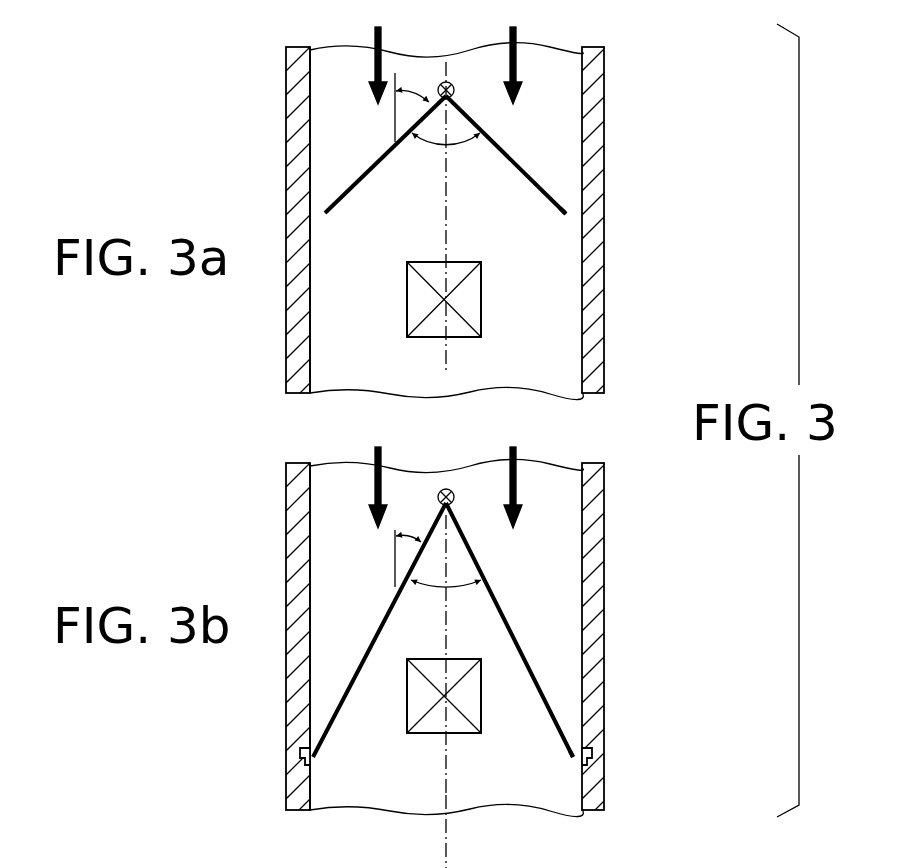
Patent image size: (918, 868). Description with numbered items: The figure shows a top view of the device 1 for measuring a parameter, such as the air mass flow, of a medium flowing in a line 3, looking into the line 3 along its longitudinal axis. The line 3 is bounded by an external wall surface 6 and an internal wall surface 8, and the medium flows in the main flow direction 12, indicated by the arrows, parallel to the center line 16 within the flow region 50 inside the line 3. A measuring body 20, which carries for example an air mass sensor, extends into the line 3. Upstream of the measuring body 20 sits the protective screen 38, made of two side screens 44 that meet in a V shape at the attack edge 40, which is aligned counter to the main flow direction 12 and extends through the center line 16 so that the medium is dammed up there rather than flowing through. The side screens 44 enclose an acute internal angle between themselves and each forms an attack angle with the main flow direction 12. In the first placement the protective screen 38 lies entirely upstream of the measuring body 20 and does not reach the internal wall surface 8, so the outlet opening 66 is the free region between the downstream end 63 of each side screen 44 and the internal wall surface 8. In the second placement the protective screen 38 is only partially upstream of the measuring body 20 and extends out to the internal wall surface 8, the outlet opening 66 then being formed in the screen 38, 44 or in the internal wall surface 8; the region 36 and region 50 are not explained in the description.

In FIG. 3a, the device 1 is at (260, 106).
In FIG. 3b, the device 1 is at (253, 483).
In FIG. 3a, the line 3 is at (324, 85).
In FIG. 3b, the line 3 is at (323, 535).
In FIG. 3a, the external wall surface 6 is at (280, 365).
In FIG. 3b, the external wall surface 6 is at (286, 790).
In FIG. 3a, the internal wall surface 8 is at (317, 347).
In FIG. 3b, the internal wall surface 8 is at (310, 797).
In FIG. 3a, the main flow direction 12 is at (508, 40).
In FIG. 3b, the main flow direction 12 is at (508, 462).
In FIG. 3a, the center line 16 is at (446, 228).
In FIG. 3b, the center line 16 is at (446, 757).
In FIG. 3a, the measuring body 20 is at (470, 303).
In FIG. 3b, the measuring body 20 is at (465, 695).
In FIG. 3b, the outlet 36 is at (446, 866).
In FIG. 3a, the protective screen 38 is at (512, 146).
In FIG. 3b, the protective screen 38 is at (513, 612).
In FIG. 3a, the attack edge 40 is at (453, 94).
In FIG. 3b, the attack edge 40 is at (455, 500).
In FIG. 3a, the side screen 44 is at (337, 187).
In FIG. 3b, the side screen 44 is at (342, 690).
In FIG. 3a, the flow channel 50 is at (538, 372).
In FIG. 3b, the flow channel 50 is at (543, 792).
In FIG. 3a, the downstream end 63 is at (569, 205).
In FIG. 3b, the downstream end 63 is at (574, 737).
In FIG. 3a, the outlet opening 66 is at (565, 216).
In FIG. 3b, the outlet opening 66 is at (300, 757).